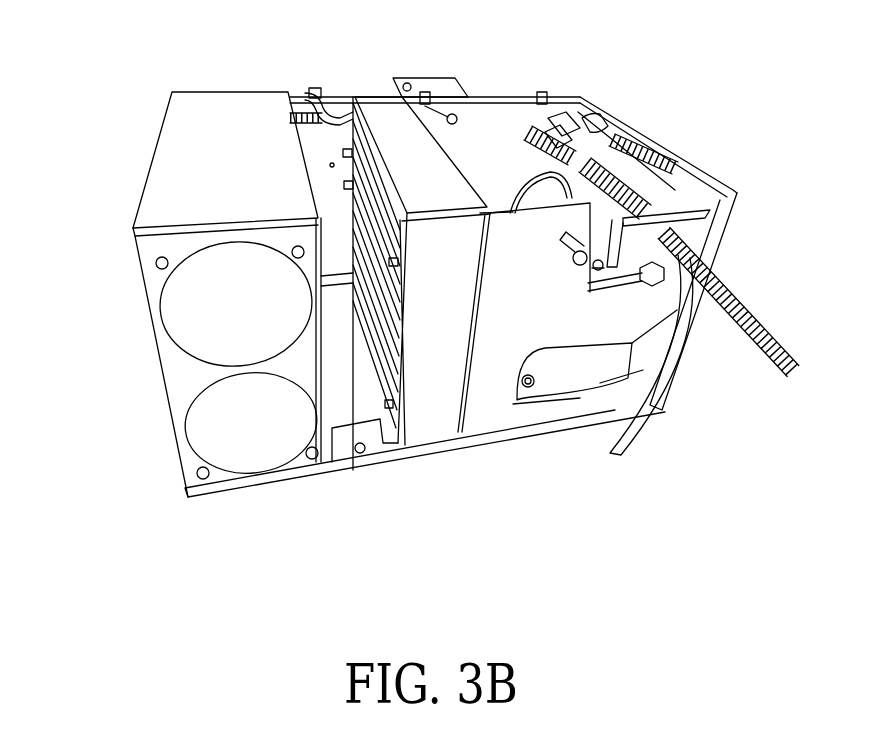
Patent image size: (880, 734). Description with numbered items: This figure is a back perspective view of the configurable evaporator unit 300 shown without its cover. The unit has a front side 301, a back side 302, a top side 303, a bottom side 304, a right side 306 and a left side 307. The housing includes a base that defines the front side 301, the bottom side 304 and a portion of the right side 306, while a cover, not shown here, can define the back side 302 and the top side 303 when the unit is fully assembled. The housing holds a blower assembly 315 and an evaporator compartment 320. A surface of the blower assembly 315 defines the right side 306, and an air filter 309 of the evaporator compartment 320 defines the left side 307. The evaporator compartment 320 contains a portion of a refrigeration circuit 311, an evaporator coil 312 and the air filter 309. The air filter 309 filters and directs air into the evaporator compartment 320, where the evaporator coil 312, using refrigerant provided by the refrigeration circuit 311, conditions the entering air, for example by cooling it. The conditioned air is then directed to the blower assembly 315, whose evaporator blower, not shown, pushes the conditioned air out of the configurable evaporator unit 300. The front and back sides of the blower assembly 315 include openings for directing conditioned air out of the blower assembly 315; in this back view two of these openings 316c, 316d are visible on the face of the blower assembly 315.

The configurable evaporator unit 300 is at (701, 71).
The front side 301 is at (349, 75).
The back side 302 is at (722, 231).
The top side 303 is at (242, 104).
The bottom side 304 is at (356, 497).
The right side 306 is at (104, 285).
The left side 307 is at (758, 210).
The air filter 309 is at (713, 173).
The refrigeration circuit 311 is at (578, 190).
The evaporator coil 312 is at (387, 113).
The blower assembly 315 is at (191, 110).
The opening 316c is at (170, 320).
The opening 316d is at (193, 440).
The evaporator compartment 320 is at (578, 95).